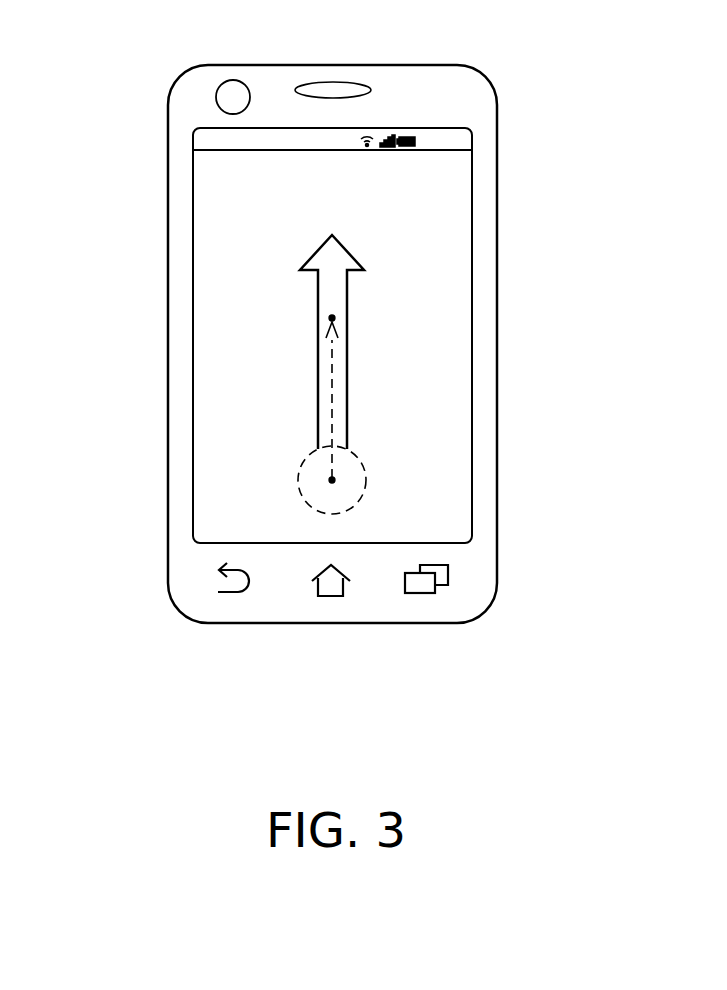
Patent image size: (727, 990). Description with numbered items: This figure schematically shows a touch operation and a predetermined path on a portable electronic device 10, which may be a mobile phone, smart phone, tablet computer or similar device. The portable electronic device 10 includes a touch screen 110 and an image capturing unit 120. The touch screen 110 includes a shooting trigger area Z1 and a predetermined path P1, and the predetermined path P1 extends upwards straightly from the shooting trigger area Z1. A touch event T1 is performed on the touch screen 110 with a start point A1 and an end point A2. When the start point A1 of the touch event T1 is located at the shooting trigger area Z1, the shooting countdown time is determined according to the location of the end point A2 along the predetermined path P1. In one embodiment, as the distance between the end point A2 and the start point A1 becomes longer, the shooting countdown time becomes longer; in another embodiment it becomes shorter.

The portable electronic device 10 is at (425, 65).
The image capturing unit 120 is at (216, 97).
The touch screen 110 is at (471, 323).
The predetermined path P1 is at (350, 252).
The shooting trigger area Z1 is at (358, 458).
The touch event T1 is at (330, 402).
The start point A1 is at (332, 480).
The end point A2 is at (330, 318).